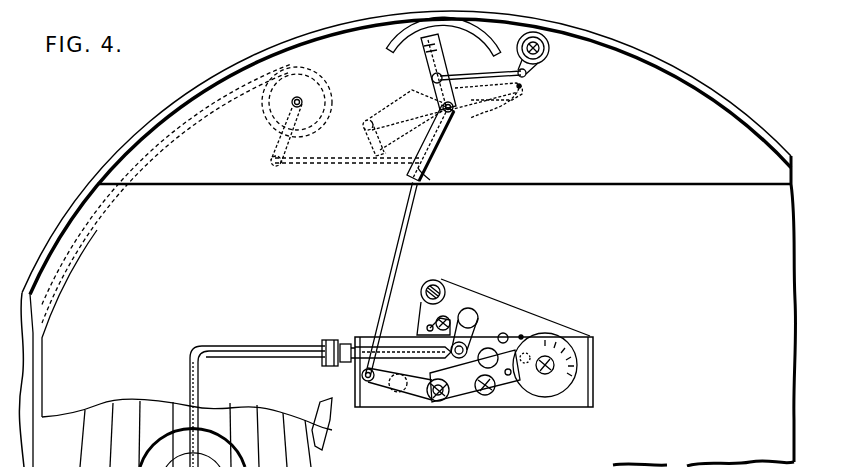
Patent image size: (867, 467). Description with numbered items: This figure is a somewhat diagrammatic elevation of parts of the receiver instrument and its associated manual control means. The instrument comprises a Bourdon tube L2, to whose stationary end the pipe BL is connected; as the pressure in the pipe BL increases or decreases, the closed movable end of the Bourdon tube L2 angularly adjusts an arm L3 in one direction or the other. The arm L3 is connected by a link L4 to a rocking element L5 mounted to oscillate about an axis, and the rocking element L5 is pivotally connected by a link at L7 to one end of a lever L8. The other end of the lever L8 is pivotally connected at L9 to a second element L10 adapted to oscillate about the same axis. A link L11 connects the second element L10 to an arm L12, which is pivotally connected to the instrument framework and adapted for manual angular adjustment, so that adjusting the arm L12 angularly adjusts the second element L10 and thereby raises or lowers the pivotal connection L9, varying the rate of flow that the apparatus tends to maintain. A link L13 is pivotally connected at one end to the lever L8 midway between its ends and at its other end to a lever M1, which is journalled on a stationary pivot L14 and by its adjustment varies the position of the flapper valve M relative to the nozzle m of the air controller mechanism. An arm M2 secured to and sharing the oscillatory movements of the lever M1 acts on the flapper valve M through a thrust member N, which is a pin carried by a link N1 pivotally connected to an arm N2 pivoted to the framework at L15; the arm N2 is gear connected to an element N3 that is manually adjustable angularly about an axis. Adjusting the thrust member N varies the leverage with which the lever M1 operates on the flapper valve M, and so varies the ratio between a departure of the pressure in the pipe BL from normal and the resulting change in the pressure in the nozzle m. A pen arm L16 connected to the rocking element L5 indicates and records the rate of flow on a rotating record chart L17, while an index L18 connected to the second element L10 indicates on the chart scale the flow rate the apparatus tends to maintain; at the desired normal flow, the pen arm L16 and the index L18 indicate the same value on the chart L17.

The pipe BL is at (104, 212).
The Bourdon tube L2 is at (308, 80).
The arm L3 is at (275, 150).
The link L4 is at (328, 165).
The rocking element L5 is at (434, 146).
The pivotal link connection L7 is at (363, 127).
The lever L8 is at (470, 138).
The pivotal connection L9 is at (524, 92).
The second element L10 is at (490, 120).
The link L11 is at (476, 78).
The arm L12 is at (528, 72).
The link L13 is at (405, 210).
The stationary pivot L14 is at (440, 401).
The pivot L15 is at (520, 338).
The pen arm L16 is at (300, 408).
The rotating record chart L17 is at (72, 416).
The index L18 is at (322, 420).
The nozzle m is at (428, 343).
The flapper valve M is at (456, 335).
The lever M1 is at (412, 392).
The arm M2 is at (437, 380).
The thrust member N is at (462, 400).
The link N1 is at (505, 332).
The arm N2 is at (525, 337).
The element N3 is at (548, 398).